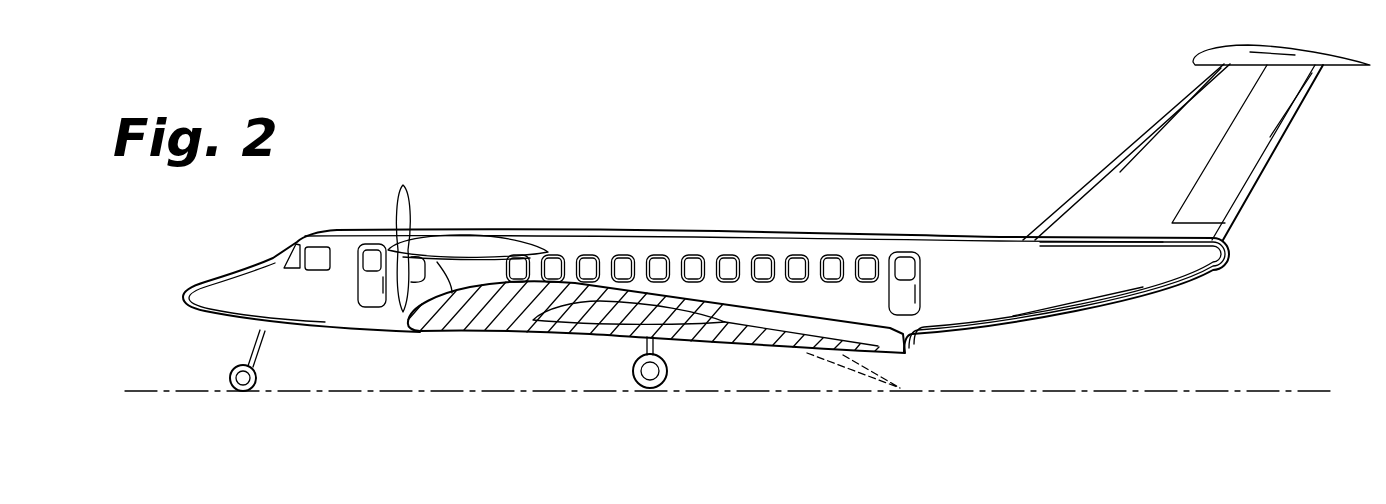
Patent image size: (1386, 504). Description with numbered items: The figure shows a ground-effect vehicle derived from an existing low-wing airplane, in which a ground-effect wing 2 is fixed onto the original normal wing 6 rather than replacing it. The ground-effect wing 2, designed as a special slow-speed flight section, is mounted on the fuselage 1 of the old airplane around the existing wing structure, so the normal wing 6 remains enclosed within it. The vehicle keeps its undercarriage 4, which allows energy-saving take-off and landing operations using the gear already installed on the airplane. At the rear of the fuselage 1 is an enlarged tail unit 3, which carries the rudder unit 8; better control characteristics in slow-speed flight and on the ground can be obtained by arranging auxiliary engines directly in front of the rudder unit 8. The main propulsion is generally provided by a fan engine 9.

The fuselage 1 is at (640, 256).
The ground-effect wing 2 is at (491, 313).
The tail unit 3 is at (1198, 142).
The undercarriage 4 is at (245, 390).
The normal wing 6 is at (584, 315).
The rudder unit 8 is at (1222, 176).
The fan engine 9 is at (1183, 157).